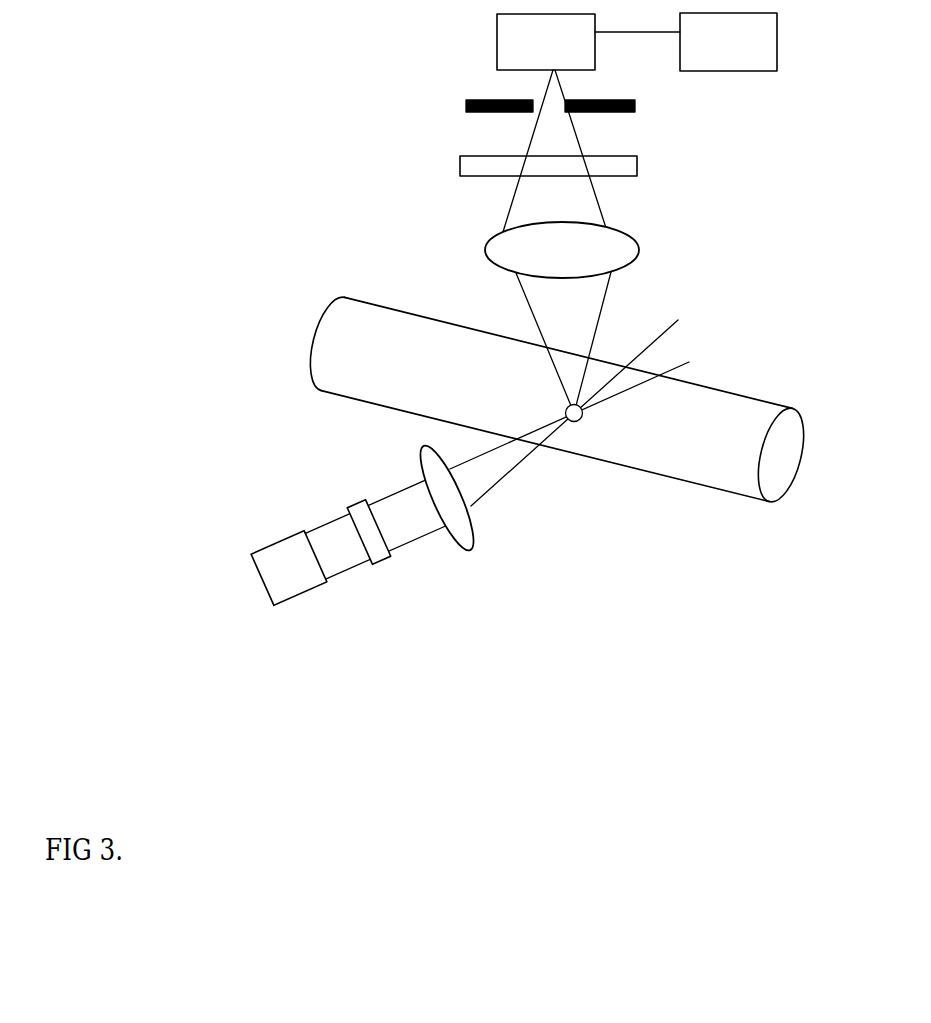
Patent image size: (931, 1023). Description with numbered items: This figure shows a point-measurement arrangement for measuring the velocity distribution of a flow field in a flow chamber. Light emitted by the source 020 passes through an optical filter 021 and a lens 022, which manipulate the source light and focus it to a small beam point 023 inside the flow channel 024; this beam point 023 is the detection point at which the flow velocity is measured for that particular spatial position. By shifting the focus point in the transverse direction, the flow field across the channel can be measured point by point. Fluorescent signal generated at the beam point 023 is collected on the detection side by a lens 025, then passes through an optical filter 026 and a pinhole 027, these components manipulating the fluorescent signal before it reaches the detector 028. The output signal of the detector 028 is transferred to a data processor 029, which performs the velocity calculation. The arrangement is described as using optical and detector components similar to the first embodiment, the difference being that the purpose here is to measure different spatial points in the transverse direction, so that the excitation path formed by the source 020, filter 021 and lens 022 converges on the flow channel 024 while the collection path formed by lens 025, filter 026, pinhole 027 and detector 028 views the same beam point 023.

The light source 020 is at (328, 605).
The optical filter 021 is at (408, 566).
The lens 022 is at (435, 471).
The beam point 023 is at (584, 436).
The flow channel 024 is at (722, 372).
The lens 025 is at (466, 241).
The optical filter 026 is at (436, 163).
The pinhole 027 is at (446, 97).
The detector 028 is at (478, 42).
The data processor 029 is at (764, 90).